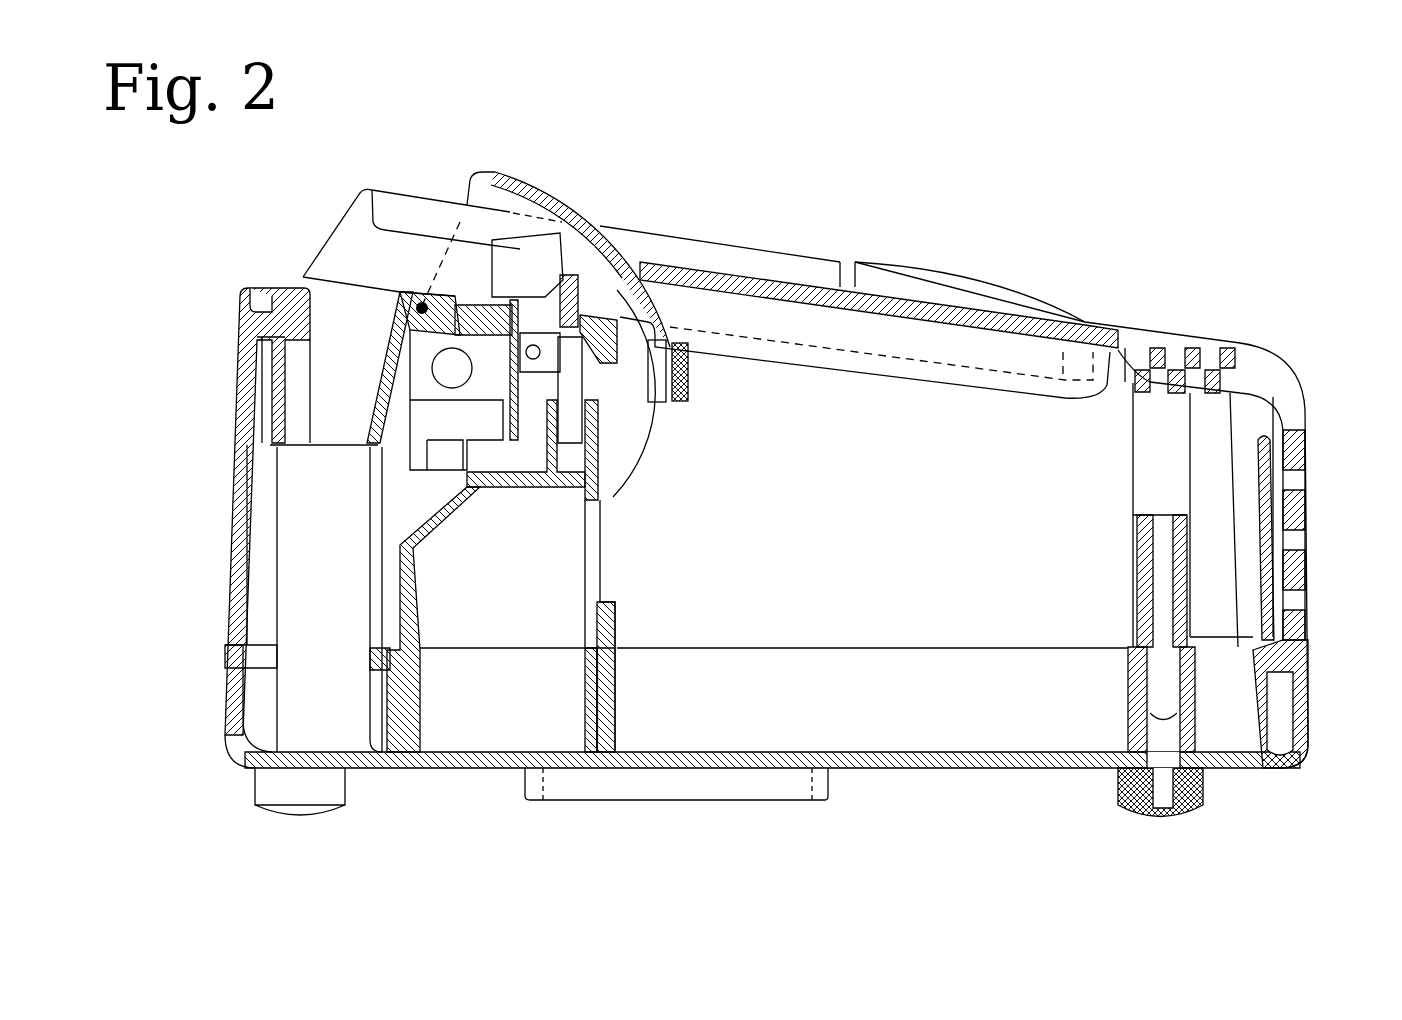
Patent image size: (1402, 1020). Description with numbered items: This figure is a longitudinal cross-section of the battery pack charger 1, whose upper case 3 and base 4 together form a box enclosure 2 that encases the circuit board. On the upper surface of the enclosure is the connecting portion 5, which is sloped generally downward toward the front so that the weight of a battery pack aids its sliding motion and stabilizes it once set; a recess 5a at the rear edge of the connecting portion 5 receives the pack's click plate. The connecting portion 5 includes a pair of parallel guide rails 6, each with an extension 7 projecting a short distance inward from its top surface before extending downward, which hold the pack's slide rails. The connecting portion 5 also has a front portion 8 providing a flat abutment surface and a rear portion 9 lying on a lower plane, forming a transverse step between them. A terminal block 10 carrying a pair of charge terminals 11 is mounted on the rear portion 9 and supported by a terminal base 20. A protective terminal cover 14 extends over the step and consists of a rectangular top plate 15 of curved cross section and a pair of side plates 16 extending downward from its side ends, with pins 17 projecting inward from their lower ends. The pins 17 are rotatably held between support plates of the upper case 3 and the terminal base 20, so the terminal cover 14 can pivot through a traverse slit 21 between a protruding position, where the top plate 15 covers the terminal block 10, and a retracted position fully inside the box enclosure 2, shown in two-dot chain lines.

The battery pack charger 1 is at (1016, 214).
The box enclosure 2 is at (1247, 340).
The upper case 3 is at (1303, 398).
The base 4 is at (957, 768).
The connecting portion 5 is at (906, 250).
The recess 5a is at (268, 288).
The guide rails 6 is at (726, 240).
The extension 7 is at (415, 210).
The front portion 8 is at (800, 288).
The rear portion 9 is at (417, 290).
The terminal block 10 is at (455, 318).
The charge terminals 11 is at (528, 255).
The terminal cover 14 is at (497, 174).
The top plate 15 is at (588, 262).
The side plates 16 is at (600, 232).
The pins 17 is at (425, 375).
The terminal base 20 is at (598, 490).
The traverse slit 21 is at (620, 232).